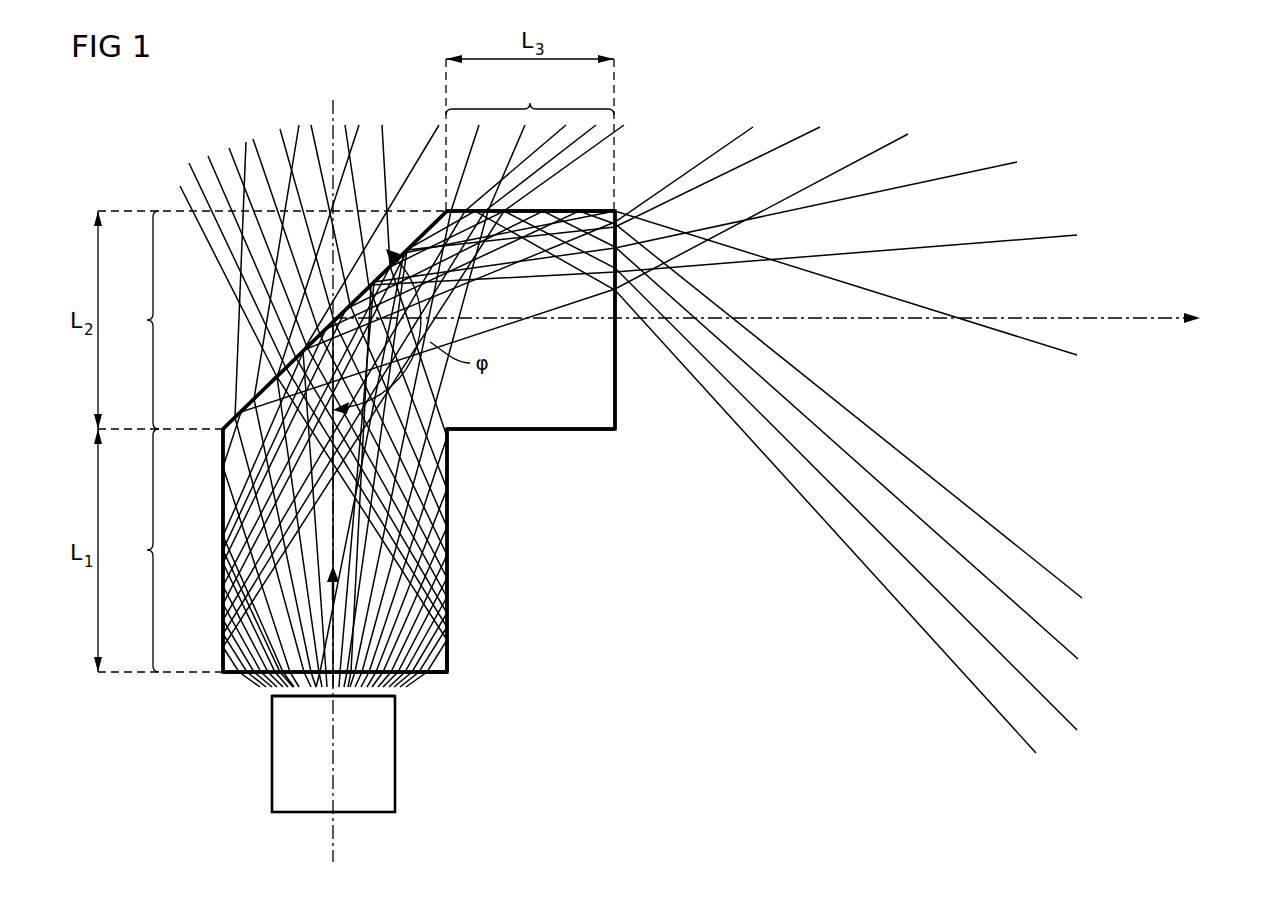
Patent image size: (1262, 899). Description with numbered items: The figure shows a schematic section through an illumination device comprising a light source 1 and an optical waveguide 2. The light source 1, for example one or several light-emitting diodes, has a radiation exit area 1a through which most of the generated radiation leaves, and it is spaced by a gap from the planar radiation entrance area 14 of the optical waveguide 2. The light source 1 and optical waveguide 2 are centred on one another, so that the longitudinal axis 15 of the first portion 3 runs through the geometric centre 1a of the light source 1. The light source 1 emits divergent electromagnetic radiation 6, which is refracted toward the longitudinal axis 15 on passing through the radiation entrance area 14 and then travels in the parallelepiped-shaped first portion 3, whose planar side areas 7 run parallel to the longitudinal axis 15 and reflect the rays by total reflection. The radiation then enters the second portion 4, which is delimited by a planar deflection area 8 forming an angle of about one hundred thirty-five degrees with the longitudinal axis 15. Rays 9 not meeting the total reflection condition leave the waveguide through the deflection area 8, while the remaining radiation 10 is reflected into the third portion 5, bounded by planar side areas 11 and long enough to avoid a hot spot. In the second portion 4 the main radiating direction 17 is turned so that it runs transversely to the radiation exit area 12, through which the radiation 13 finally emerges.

The light source 1 is at (396, 752).
The radiation exit area 1a is at (352, 705).
The optical waveguide 2 is at (473, 460).
The first portion 3 is at (144, 550).
The second portion 4 is at (144, 320).
The third portion 5 is at (530, 94).
The electromagnetic radiation 6 is at (417, 673).
The side areas 7 is at (222, 556).
The deflection area 8 is at (250, 408).
The rays 9 is at (226, 160).
The radiation 10 is at (606, 210).
The side areas 11 is at (560, 210).
The radiation exit area 12 is at (617, 400).
The radiation 13 is at (915, 460).
The radiation entrance area 14 is at (438, 659).
The longitudinal axis 15 is at (336, 845).
The main radiating direction 17 is at (1140, 318).